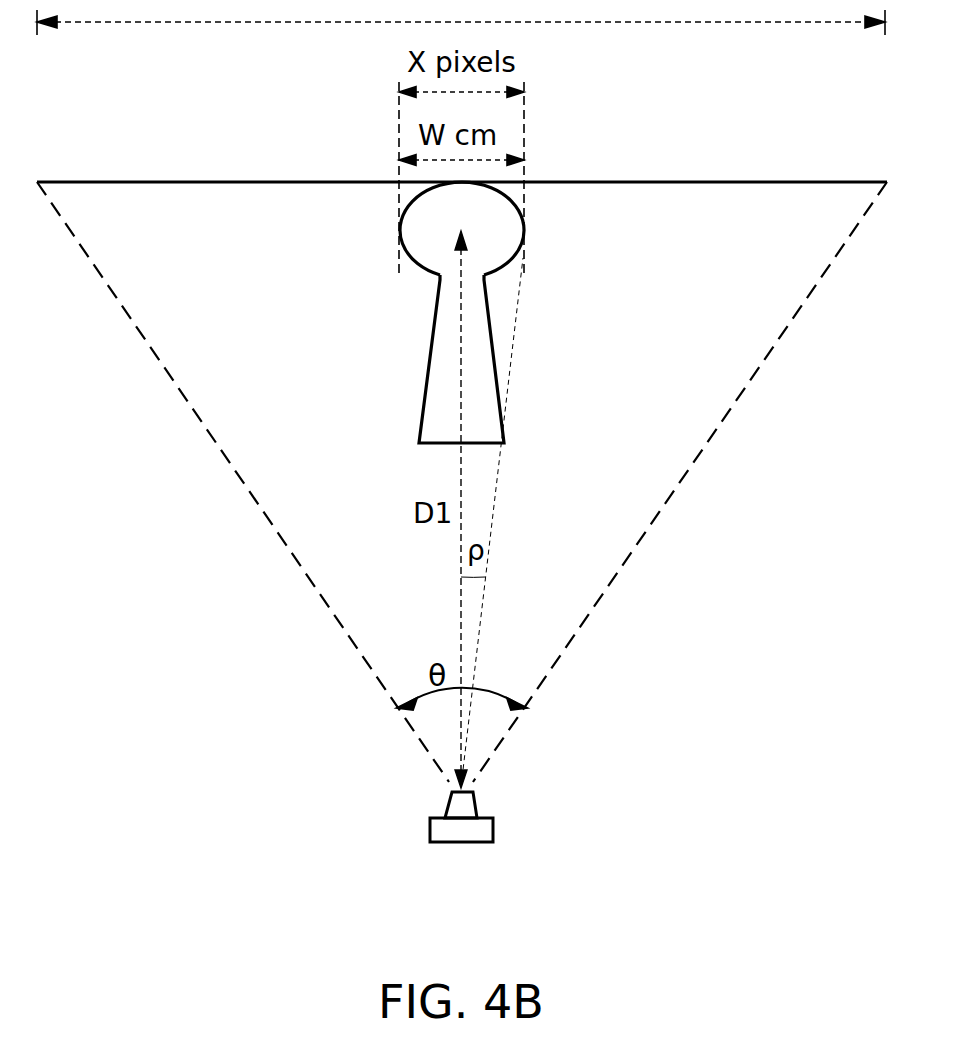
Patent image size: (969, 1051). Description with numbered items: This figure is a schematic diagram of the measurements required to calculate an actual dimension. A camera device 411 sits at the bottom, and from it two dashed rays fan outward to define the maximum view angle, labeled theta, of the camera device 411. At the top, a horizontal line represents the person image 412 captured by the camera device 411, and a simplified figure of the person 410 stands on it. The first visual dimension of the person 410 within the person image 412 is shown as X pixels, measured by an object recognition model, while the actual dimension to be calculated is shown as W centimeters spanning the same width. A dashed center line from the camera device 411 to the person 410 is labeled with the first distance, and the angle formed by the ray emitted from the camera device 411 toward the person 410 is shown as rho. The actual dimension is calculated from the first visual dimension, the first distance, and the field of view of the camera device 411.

The person 410 is at (427, 360).
The camera device 411 is at (495, 830).
The person image 412 is at (773, 181).